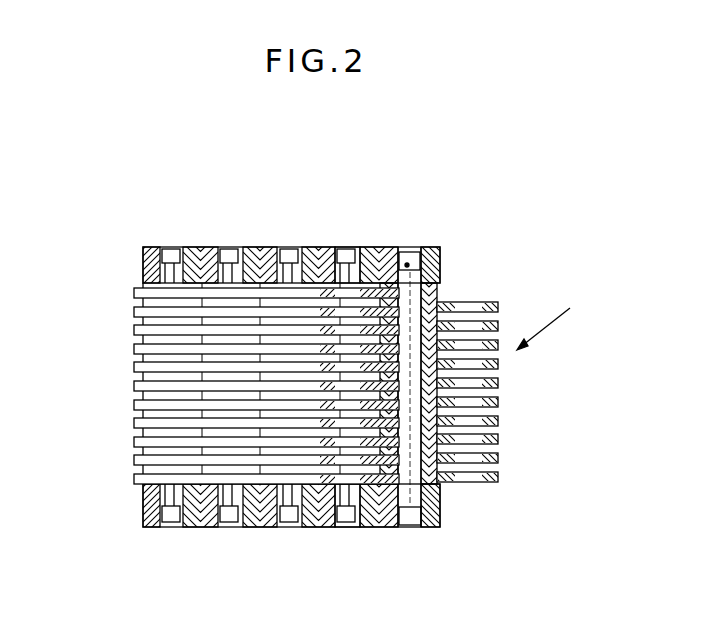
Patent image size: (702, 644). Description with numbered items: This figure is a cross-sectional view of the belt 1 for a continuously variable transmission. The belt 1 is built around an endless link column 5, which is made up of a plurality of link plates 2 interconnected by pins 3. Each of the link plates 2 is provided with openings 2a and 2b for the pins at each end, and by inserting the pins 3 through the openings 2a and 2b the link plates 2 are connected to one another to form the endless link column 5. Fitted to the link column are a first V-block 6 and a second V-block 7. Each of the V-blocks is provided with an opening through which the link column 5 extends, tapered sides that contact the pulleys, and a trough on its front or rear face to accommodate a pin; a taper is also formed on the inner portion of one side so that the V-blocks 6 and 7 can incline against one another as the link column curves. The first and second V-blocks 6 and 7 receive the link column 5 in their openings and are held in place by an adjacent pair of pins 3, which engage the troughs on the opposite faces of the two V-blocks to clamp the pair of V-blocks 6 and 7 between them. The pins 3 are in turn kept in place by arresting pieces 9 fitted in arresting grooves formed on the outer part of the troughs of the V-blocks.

The belt 1 is at (180, 232).
The link plates 2 is at (498, 301).
The opening 2a is at (472, 301).
The opening 2b is at (440, 262).
The pins 3 is at (414, 247).
The endless link column 5 is at (551, 314).
The first V-block 6 is at (394, 247).
The second V-block 7 is at (373, 247).
The arresting pieces 9 is at (343, 247).